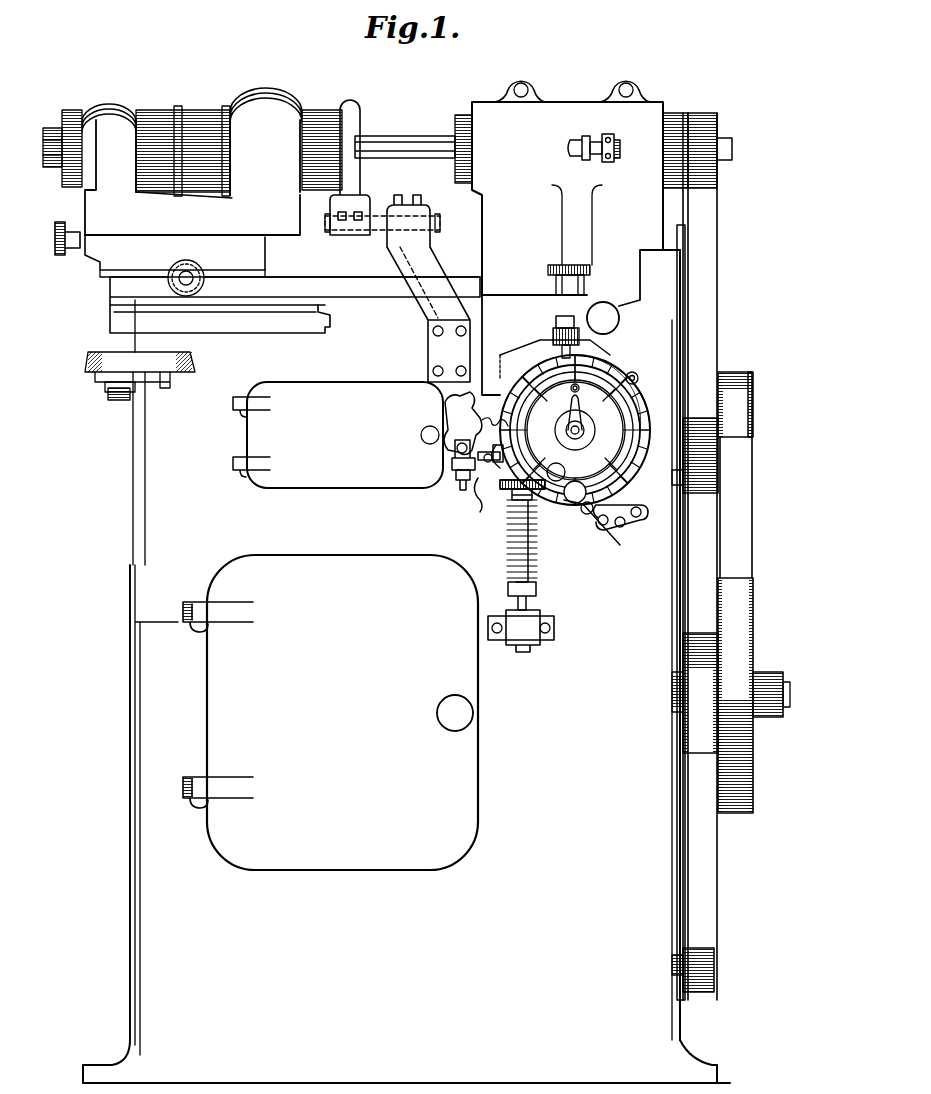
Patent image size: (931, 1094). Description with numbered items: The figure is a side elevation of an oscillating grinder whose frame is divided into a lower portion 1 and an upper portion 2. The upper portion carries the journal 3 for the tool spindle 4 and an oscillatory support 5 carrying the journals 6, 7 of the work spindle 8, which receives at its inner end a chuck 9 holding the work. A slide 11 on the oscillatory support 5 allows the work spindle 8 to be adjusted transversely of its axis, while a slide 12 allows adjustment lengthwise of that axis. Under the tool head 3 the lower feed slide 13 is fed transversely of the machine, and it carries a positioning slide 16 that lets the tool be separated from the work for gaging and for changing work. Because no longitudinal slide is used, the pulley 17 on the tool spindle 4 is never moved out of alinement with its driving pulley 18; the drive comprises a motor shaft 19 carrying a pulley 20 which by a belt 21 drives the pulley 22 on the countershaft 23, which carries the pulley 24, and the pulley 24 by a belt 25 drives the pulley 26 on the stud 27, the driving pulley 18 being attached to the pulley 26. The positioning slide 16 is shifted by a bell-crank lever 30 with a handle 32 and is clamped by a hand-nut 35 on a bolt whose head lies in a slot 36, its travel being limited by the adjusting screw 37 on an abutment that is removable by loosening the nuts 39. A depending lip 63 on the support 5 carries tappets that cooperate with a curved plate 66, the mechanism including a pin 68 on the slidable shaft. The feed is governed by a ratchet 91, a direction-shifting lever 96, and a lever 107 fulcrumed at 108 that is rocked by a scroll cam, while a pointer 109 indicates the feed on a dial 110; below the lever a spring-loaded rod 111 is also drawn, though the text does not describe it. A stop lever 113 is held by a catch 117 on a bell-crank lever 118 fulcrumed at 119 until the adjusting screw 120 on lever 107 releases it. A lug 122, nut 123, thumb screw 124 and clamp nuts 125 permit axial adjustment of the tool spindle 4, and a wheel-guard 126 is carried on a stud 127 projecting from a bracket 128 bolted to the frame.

The lower portion 1 is at (135, 598).
The upper portion 2 is at (158, 436).
The journal 3 is at (555, 112).
The tool spindle 4 is at (424, 140).
The oscillatory support 5 is at (297, 284).
The journal 6 is at (108, 112).
The journal 7 is at (258, 103).
The work spindle 8 is at (50, 130).
The chuck 9 is at (318, 116).
The slide 11 is at (122, 272).
The slide 12 is at (108, 240).
The feed slide 13 is at (652, 392).
The positioning slide 16 is at (620, 345).
The pulley 17 is at (720, 124).
The driving pulley 18 is at (718, 330).
The shaft 19 is at (678, 975).
The pulley 20 is at (718, 958).
The belt 21 is at (705, 853).
The pulley 22 is at (680, 636).
The countershaft 23 is at (785, 684).
The pulley 24 is at (752, 612).
The belt 25 is at (740, 488).
The pulley 26 is at (752, 386).
The stud 27 is at (755, 405).
The bell-crank lever 30 is at (682, 298).
The handle 32 is at (700, 470).
The hand-nut 35 is at (550, 266).
The slot 36 is at (553, 338).
The adjusting screw 37 is at (605, 312).
The nuts 39 is at (558, 316).
The depending lip 63 is at (270, 332).
The curved plate 66 is at (96, 374).
The pin 68 is at (118, 395).
The ratchet 91 is at (585, 422).
The lever 96 is at (612, 535).
The lever 107 is at (488, 490).
The fulcrum 108 is at (564, 512).
The pointer 109 is at (510, 385).
The dial 110 is at (628, 492).
The spring rod 111 is at (512, 503).
The stop lever 113 is at (448, 398).
The catch 117 is at (452, 422).
The bell-crank lever 118 is at (455, 452).
The fulcrum 119 is at (470, 465).
The adjusting screw 120 is at (462, 484).
The lug 122 is at (577, 142).
The nut 123 is at (598, 148).
The thumb screw 124 is at (620, 150).
The clamp nuts 125 is at (628, 86).
The wheel-guard 126 is at (352, 130).
The stud 127 is at (372, 212).
The bracket 128 is at (430, 278).